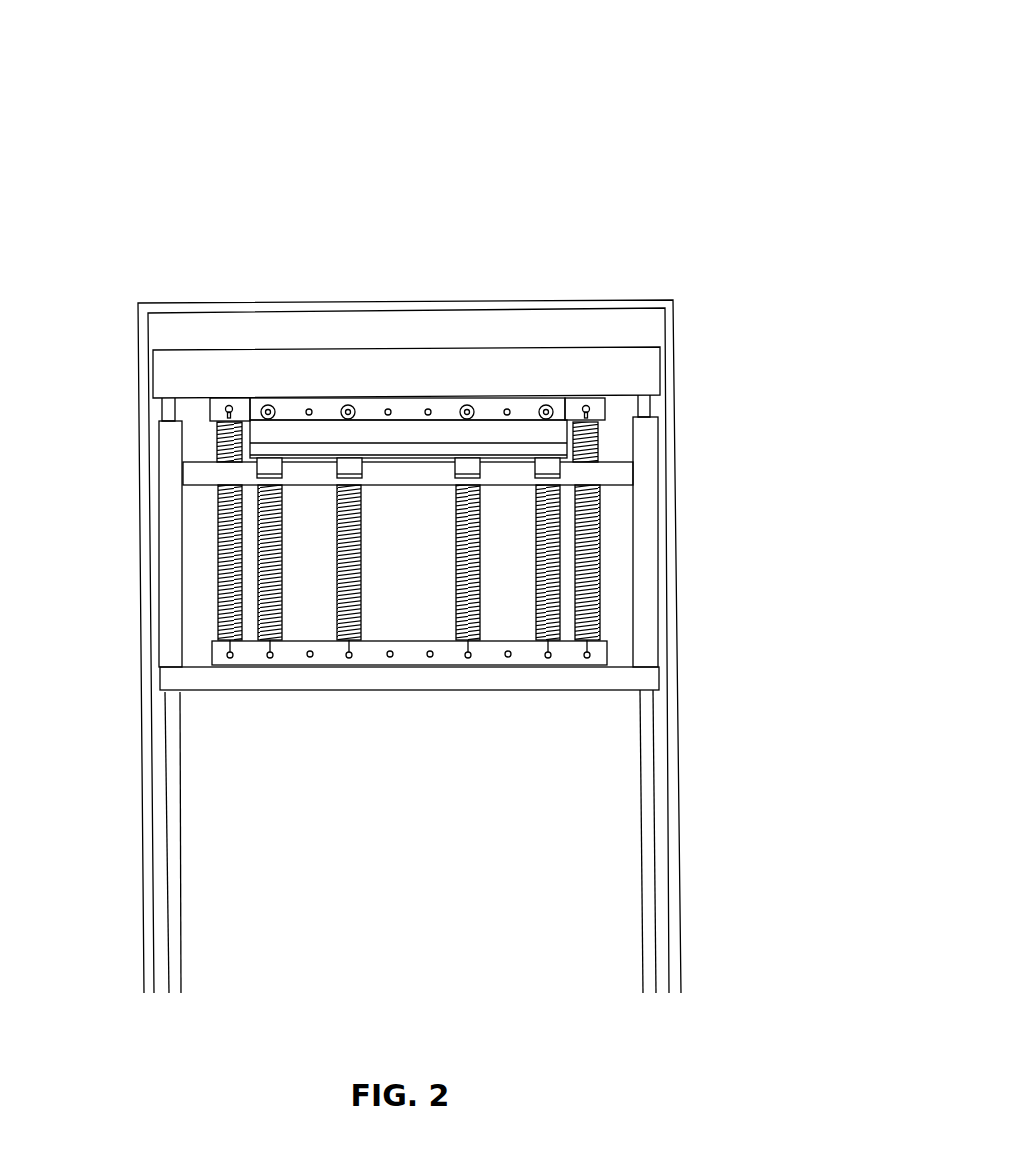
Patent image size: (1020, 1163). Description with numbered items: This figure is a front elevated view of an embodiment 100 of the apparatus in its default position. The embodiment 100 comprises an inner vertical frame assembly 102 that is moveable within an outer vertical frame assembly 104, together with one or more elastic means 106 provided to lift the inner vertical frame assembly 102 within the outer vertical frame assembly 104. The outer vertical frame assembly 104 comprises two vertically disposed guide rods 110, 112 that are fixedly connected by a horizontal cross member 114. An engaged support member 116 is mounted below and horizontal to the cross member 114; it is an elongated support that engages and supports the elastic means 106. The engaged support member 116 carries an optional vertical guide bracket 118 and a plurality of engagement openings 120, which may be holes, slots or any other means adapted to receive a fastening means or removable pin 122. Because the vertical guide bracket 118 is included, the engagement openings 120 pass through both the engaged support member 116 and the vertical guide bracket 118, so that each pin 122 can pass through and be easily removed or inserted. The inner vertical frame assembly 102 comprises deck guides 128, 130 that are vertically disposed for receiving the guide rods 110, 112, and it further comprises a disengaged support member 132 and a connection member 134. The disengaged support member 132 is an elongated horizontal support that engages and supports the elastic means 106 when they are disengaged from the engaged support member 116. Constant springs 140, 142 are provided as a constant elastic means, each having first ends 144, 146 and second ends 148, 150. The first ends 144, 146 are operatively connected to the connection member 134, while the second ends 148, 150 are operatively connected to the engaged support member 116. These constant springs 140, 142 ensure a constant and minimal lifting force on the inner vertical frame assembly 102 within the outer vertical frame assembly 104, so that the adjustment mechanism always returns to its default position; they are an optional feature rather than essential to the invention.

The embodiment 100 is at (473, 499).
The inner vertical frame assembly 102 is at (293, 728).
The outer vertical frame assembly 104 is at (696, 403).
The elastic means 106 is at (535, 603).
The guide rod 110 is at (172, 793).
The guide rod 112 is at (648, 795).
The horizontal cross member 114 is at (637, 370).
The engaged support member 116 is at (225, 403).
The vertical guide bracket 118 is at (295, 433).
The engagement openings 120 is at (408, 383).
The removable pin 122 is at (265, 405).
The deck guide 128 is at (170, 525).
The deck guide 130 is at (650, 473).
The disengaged support member 132 is at (636, 505).
The connection member 134 is at (525, 655).
The constant spring 140 is at (222, 577).
The constant spring 142 is at (593, 575).
The first end 144 is at (228, 648).
The first end 146 is at (588, 645).
The second end 148 is at (228, 422).
The second end 150 is at (598, 425).